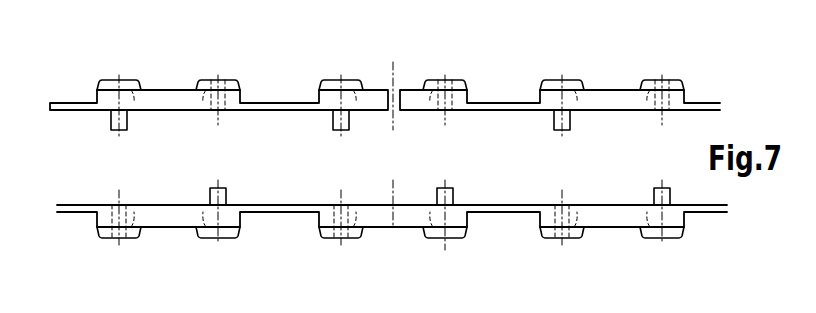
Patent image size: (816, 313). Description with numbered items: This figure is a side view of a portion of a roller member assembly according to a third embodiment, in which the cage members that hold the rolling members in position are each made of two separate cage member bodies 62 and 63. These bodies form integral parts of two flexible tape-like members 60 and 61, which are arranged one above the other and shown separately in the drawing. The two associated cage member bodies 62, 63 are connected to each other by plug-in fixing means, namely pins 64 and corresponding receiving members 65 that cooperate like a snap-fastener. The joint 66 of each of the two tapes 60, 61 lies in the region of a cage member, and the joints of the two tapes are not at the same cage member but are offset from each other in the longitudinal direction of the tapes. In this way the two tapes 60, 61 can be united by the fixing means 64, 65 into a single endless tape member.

The flexible tape-like member 60 is at (500, 103).
The flexible tape-like member 61 is at (503, 205).
The cage member body 62 is at (333, 88).
The cage member body 63 is at (443, 238).
The pin 64 is at (342, 122).
The receiving member 65 is at (460, 88).
The joint 66 is at (392, 85).